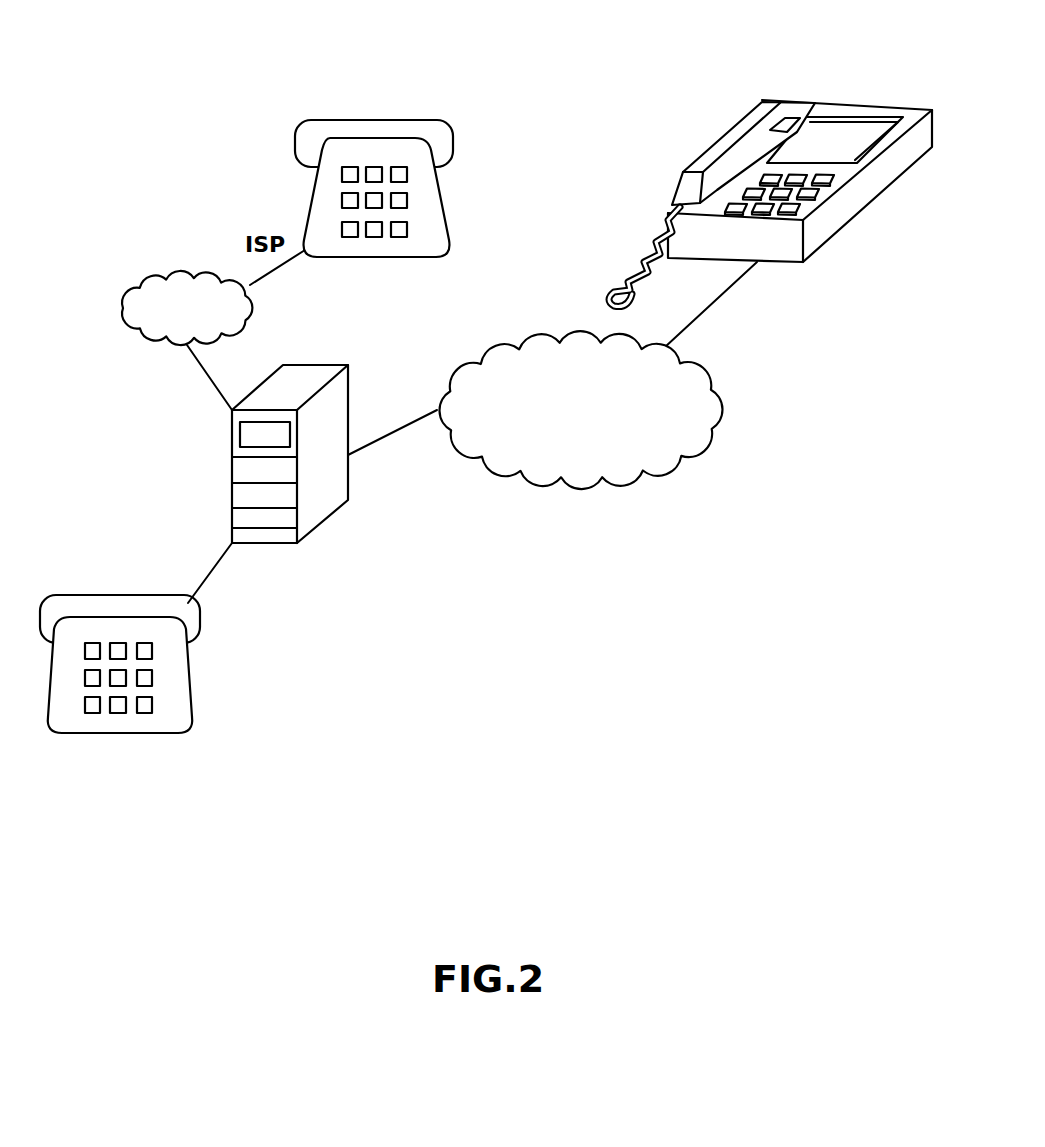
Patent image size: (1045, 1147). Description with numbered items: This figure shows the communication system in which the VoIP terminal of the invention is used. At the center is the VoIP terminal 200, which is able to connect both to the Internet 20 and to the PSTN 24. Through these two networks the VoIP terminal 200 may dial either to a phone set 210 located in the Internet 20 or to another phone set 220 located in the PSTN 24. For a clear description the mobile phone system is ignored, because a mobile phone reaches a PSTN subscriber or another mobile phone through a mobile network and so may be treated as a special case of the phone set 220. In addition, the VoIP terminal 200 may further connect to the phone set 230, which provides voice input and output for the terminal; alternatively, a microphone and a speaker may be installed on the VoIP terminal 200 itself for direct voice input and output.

The Internet 20 is at (580, 487).
The PSTN 24 is at (162, 270).
The VoIP terminal 200 is at (232, 473).
The phone set 210 is at (863, 110).
The phone set 220 is at (342, 120).
The phone set 230 is at (188, 700).